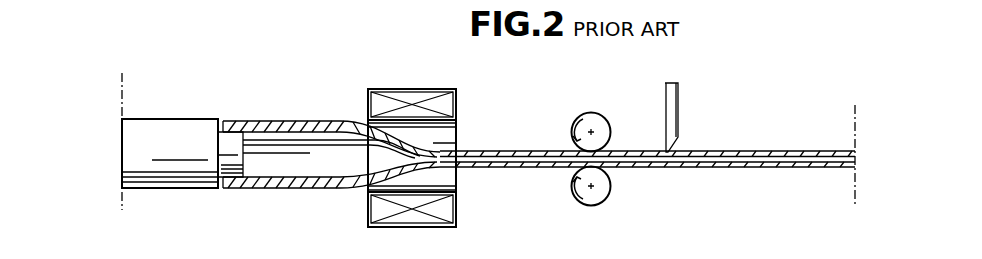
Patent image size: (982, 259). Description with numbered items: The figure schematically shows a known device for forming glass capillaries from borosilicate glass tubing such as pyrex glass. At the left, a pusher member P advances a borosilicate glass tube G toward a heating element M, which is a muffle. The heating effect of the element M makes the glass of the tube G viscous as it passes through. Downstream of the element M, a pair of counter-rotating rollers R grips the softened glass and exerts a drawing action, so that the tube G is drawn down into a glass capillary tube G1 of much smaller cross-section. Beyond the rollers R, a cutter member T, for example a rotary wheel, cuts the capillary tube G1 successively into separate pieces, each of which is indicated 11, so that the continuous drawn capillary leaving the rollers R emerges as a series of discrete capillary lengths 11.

The pusher member P is at (165, 123).
The borosilicate glass tube G is at (287, 123).
The heating element M is at (410, 98).
The counter-rotating rollers R is at (600, 177).
The cutter member T is at (677, 108).
The glass capillary tube G1 is at (636, 168).
The pieces of capillary tube 11 is at (757, 152).